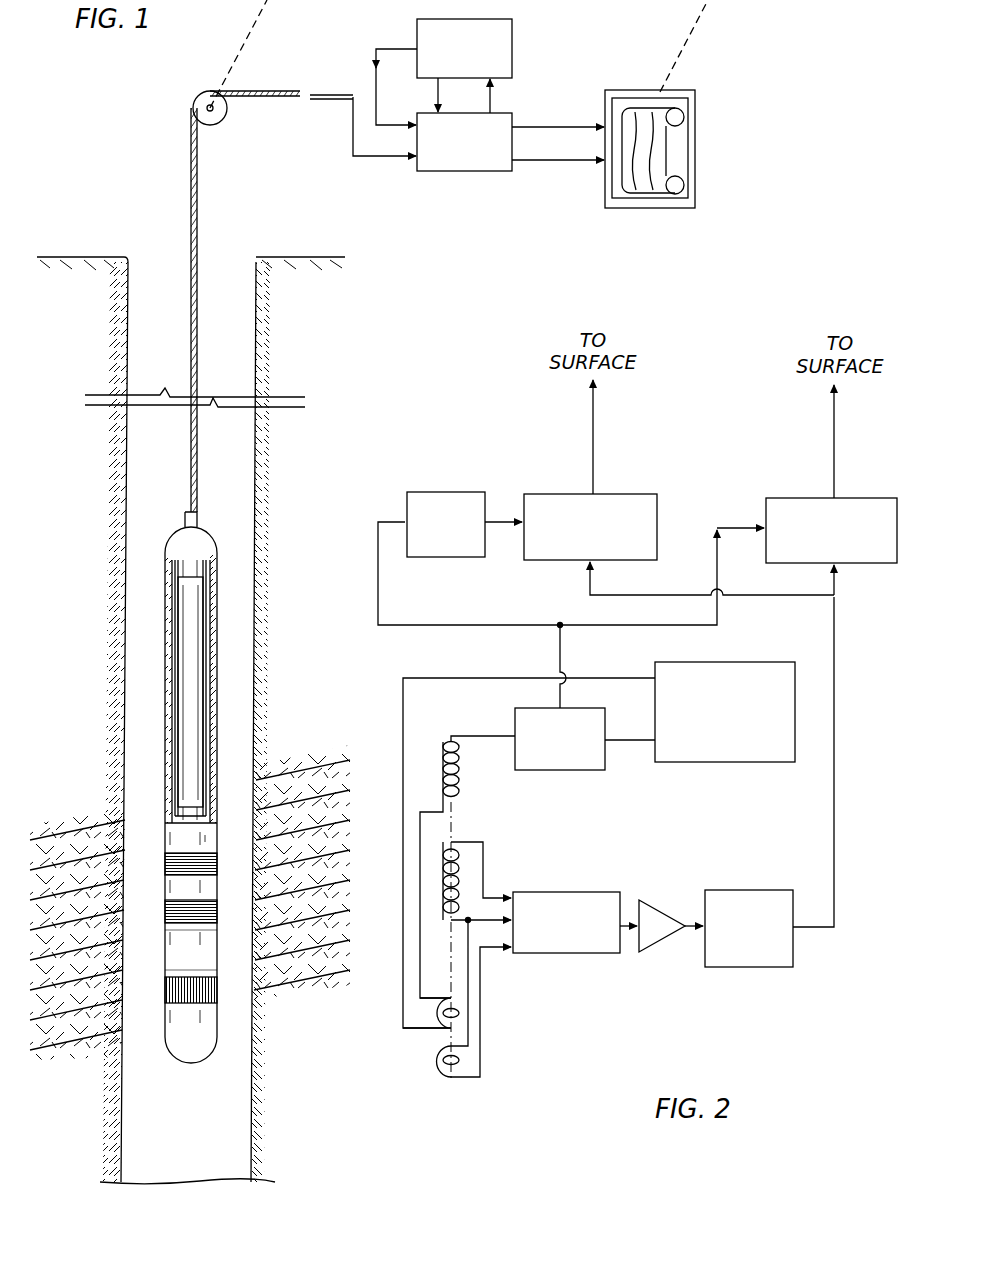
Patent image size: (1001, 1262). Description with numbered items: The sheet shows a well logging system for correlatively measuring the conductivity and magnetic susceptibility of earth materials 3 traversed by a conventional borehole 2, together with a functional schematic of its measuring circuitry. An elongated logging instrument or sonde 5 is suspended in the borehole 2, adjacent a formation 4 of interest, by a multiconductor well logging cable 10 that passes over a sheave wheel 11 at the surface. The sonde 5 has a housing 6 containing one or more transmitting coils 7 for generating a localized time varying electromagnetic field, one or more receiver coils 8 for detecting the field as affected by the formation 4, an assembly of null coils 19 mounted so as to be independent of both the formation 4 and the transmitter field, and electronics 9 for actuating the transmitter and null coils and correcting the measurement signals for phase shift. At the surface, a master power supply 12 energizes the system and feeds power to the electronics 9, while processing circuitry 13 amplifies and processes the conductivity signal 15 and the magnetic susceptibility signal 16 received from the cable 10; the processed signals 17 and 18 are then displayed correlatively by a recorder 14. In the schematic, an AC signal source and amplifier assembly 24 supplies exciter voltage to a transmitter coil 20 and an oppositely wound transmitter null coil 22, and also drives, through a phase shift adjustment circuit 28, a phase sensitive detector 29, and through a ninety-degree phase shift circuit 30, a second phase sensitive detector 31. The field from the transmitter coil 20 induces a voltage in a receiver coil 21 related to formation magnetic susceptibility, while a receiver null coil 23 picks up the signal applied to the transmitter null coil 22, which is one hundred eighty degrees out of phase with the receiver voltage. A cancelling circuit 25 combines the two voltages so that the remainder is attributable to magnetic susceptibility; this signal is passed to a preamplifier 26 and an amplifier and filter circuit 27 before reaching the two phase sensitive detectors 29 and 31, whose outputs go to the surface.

In FIG. 1, the borehole 2 is at (149, 248).
In FIG. 1, the earth materials 3 is at (95, 534).
In FIG. 1, the formation 4 is at (60, 826).
In FIG. 1, the sonde 5 is at (222, 755).
In FIG. 1, the housing 6 is at (215, 957).
In FIG. 1, the transmitting coils 7 is at (216, 866).
In FIG. 1, the receiver coils 8 is at (215, 920).
In FIG. 1, the electronics 9 is at (193, 652).
In FIG. 1, the multiconductor well logging cable 10 is at (198, 233).
In FIG. 1, the sheave wheel 11 is at (226, 117).
In FIG. 1, the master power supply 12 is at (513, 44).
In FIG. 1, the processing circuitry 13 is at (478, 172).
In FIG. 1, the recorder 14 is at (695, 150).
In FIG. 1, the conductivity signal 15 is at (353, 140).
In FIG. 2, the conductivity signal 15 is at (594, 444).
In FIG. 1, the magnetic susceptibility signal 16 is at (376, 111).
In FIG. 2, the magnetic susceptibility signal 16 is at (836, 445).
In FIG. 1, the processed conductivity signal 17 is at (572, 165).
In FIG. 1, the processed magnetic susceptibility signal 18 is at (563, 127).
In FIG. 1, the null coils 19 is at (214, 993).
In FIG. 2, the transmitter coil 20 is at (467, 795).
In FIG. 2, the receiver coil 21 is at (474, 862).
In FIG. 2, the transmitter null coil 22 is at (438, 1017).
In FIG. 2, the receiver null coil 23 is at (438, 1079).
In FIG. 2, the AC signal source and amplifier assembly 24 is at (731, 762).
In FIG. 2, the cancelling circuit 25 is at (583, 953).
In FIG. 2, the preamplifier 26 is at (655, 945).
In FIG. 2, the amplifier and filter circuit 27 is at (752, 968).
In FIG. 2, the phase shift adjustment circuit 28 is at (577, 770).
In FIG. 2, the phase sensitive detector 29 is at (795, 496).
In FIG. 2, the 90° phase shift circuit 30 is at (452, 490).
In FIG. 2, the second phase sensitive detector 31 is at (555, 562).